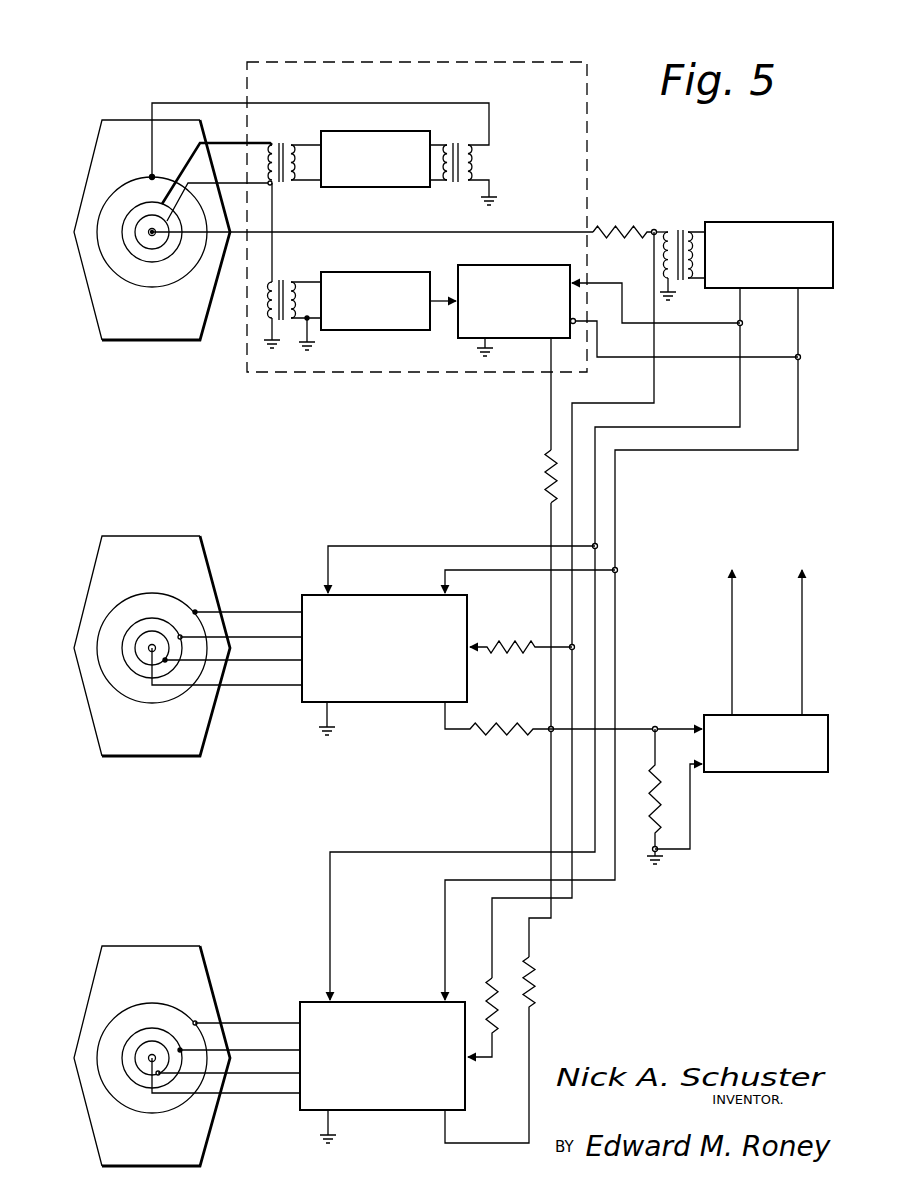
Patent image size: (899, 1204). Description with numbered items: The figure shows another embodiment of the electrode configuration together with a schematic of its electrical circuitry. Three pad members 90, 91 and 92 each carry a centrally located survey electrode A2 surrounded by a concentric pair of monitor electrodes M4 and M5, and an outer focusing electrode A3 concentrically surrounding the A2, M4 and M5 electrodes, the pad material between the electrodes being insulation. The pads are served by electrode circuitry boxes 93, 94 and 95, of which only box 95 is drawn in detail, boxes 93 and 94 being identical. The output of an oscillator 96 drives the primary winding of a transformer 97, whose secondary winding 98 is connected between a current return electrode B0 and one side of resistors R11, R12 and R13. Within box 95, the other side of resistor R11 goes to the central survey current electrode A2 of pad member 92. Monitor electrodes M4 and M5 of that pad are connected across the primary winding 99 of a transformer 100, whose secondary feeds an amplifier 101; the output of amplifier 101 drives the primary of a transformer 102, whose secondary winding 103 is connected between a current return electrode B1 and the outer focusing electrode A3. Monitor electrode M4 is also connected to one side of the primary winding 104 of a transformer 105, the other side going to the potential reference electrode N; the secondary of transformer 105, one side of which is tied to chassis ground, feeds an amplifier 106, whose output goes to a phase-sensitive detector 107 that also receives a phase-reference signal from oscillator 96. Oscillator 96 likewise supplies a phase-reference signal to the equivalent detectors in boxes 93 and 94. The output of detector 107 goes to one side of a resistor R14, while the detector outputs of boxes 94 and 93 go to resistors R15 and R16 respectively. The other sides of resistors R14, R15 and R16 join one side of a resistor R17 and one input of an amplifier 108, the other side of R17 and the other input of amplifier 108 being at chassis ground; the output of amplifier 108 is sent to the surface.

The pad member 90 is at (88, 1128).
The pad member 91 is at (90, 710).
The pad member 92 is at (85, 290).
The electrode circuitry box 93 is at (390, 1002).
The electrode circuitry box 94 is at (388, 595).
The electrode circuitry box 95 is at (447, 60).
The oscillator 96 is at (767, 222).
The transformer 97 is at (685, 224).
The secondary winding 98 is at (664, 240).
The primary winding 99 is at (268, 152).
The transformer 100 is at (284, 142).
The amplifier 101 is at (360, 131).
The transformer 102 is at (471, 134).
The secondary winding 103 is at (473, 160).
The primary winding 104 is at (268, 301).
The transformer 105 is at (284, 280).
The amplifier 106 is at (362, 272).
The phase-sensitive detector 107 is at (498, 265).
The amplifier 108 is at (760, 772).
The resistor R11 is at (623, 220).
The resistor R12 is at (521, 635).
The resistor R13 is at (497, 1017).
The resistor R14 is at (536, 476).
The resistor R15 is at (573, 733).
The resistor R16 is at (508, 1050).
The resistor R17 is at (667, 805).
The survey electrode A2 is at (147, 238).
The outer focusing electrode A3 is at (108, 1015).
The monitor electrode M4 is at (135, 230).
The monitor electrode M5 is at (125, 212).
The current return electrode B0 is at (680, 303).
The current return electrode B1 is at (477, 208).
The potential reference electrode N is at (266, 353).